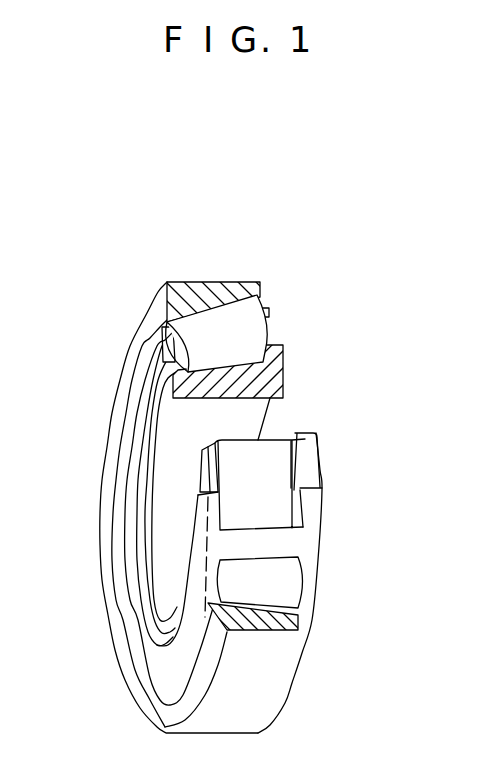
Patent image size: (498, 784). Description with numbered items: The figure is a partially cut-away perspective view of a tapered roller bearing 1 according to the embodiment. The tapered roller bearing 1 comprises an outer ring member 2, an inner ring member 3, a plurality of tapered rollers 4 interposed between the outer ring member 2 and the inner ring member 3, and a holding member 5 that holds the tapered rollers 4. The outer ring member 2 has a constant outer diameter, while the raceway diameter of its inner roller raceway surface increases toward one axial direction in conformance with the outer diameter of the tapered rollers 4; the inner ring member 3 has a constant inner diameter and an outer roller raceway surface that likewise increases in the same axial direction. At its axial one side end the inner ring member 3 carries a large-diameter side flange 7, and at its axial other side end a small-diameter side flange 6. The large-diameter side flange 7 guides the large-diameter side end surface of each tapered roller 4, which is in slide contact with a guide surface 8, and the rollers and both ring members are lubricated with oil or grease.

The tapered roller bearing 1 is at (258, 254).
The outer ring member 2 is at (197, 281).
The inner ring member 3 is at (279, 385).
The tapered roller 4 is at (203, 328).
The holding member 5 is at (313, 533).
The small-diameter side flange 6 is at (183, 385).
The large-diameter side flange 7 is at (282, 358).
The guide surface 8 is at (296, 434).